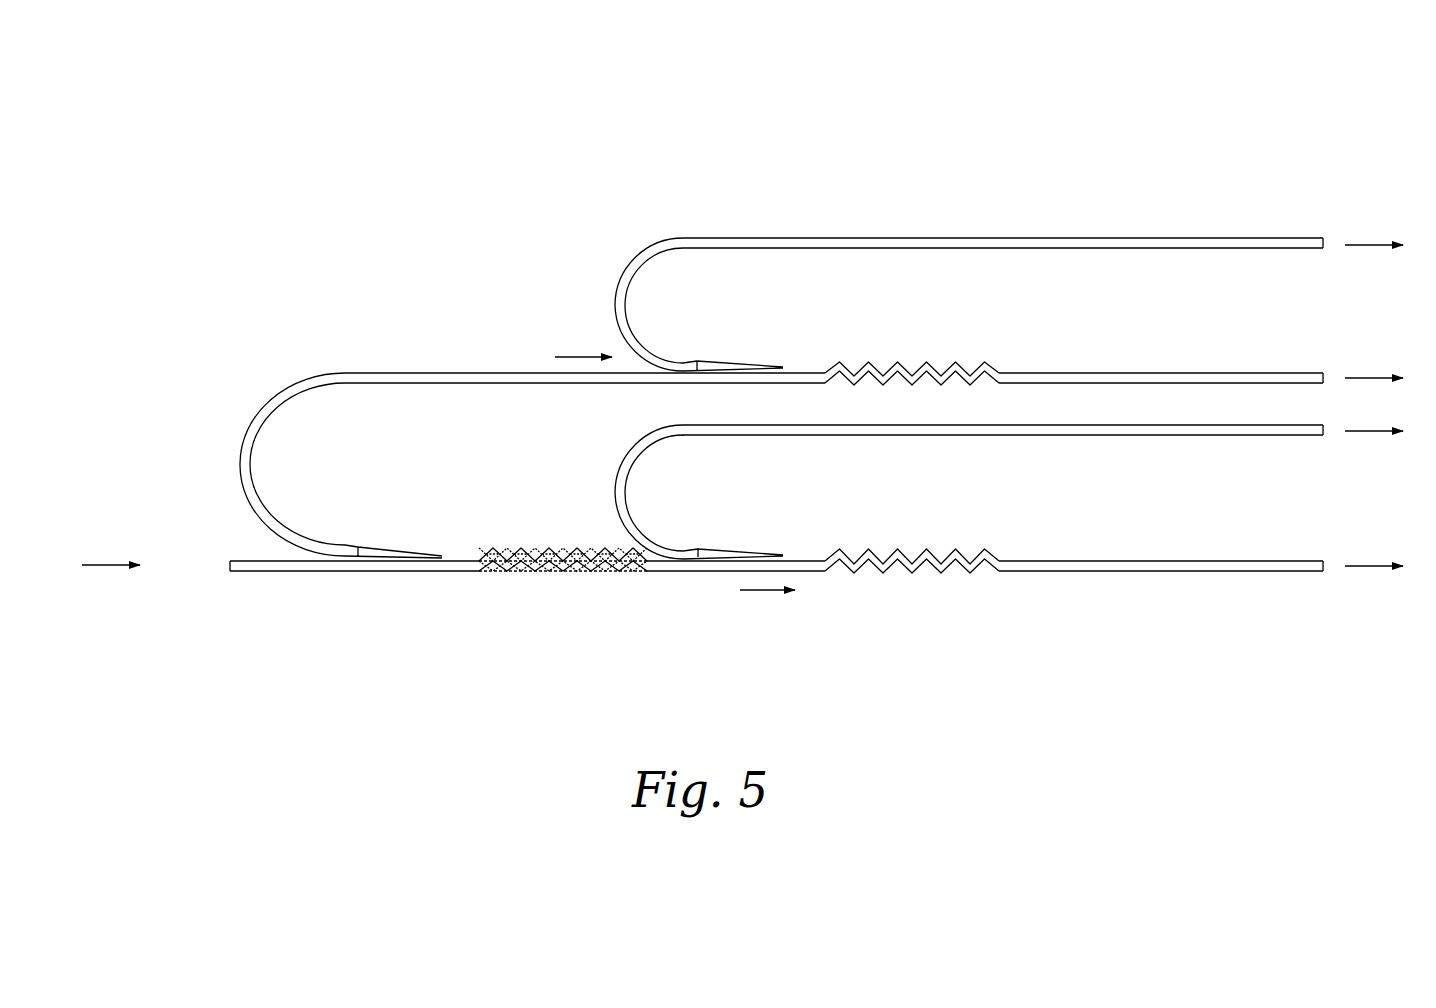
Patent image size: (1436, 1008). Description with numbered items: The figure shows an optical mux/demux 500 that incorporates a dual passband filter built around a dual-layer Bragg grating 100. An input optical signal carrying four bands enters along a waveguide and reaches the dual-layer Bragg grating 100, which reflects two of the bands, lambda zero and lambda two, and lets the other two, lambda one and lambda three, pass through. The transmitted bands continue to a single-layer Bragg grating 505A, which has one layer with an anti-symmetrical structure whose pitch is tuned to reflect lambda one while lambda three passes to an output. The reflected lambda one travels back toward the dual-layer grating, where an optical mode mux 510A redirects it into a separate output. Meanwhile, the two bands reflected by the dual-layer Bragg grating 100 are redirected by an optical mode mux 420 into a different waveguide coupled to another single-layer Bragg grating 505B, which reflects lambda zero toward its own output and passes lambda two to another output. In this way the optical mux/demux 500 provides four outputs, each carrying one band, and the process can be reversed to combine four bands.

The optical mux/demux 500 is at (751, 397).
The optical mode mux 420 is at (388, 548).
The optical mode mux 510A is at (730, 550).
The dual-layer Bragg grating 100 is at (547, 575).
The single-layer Bragg grating 505B is at (875, 372).
The single-layer Bragg grating 505A is at (883, 575).